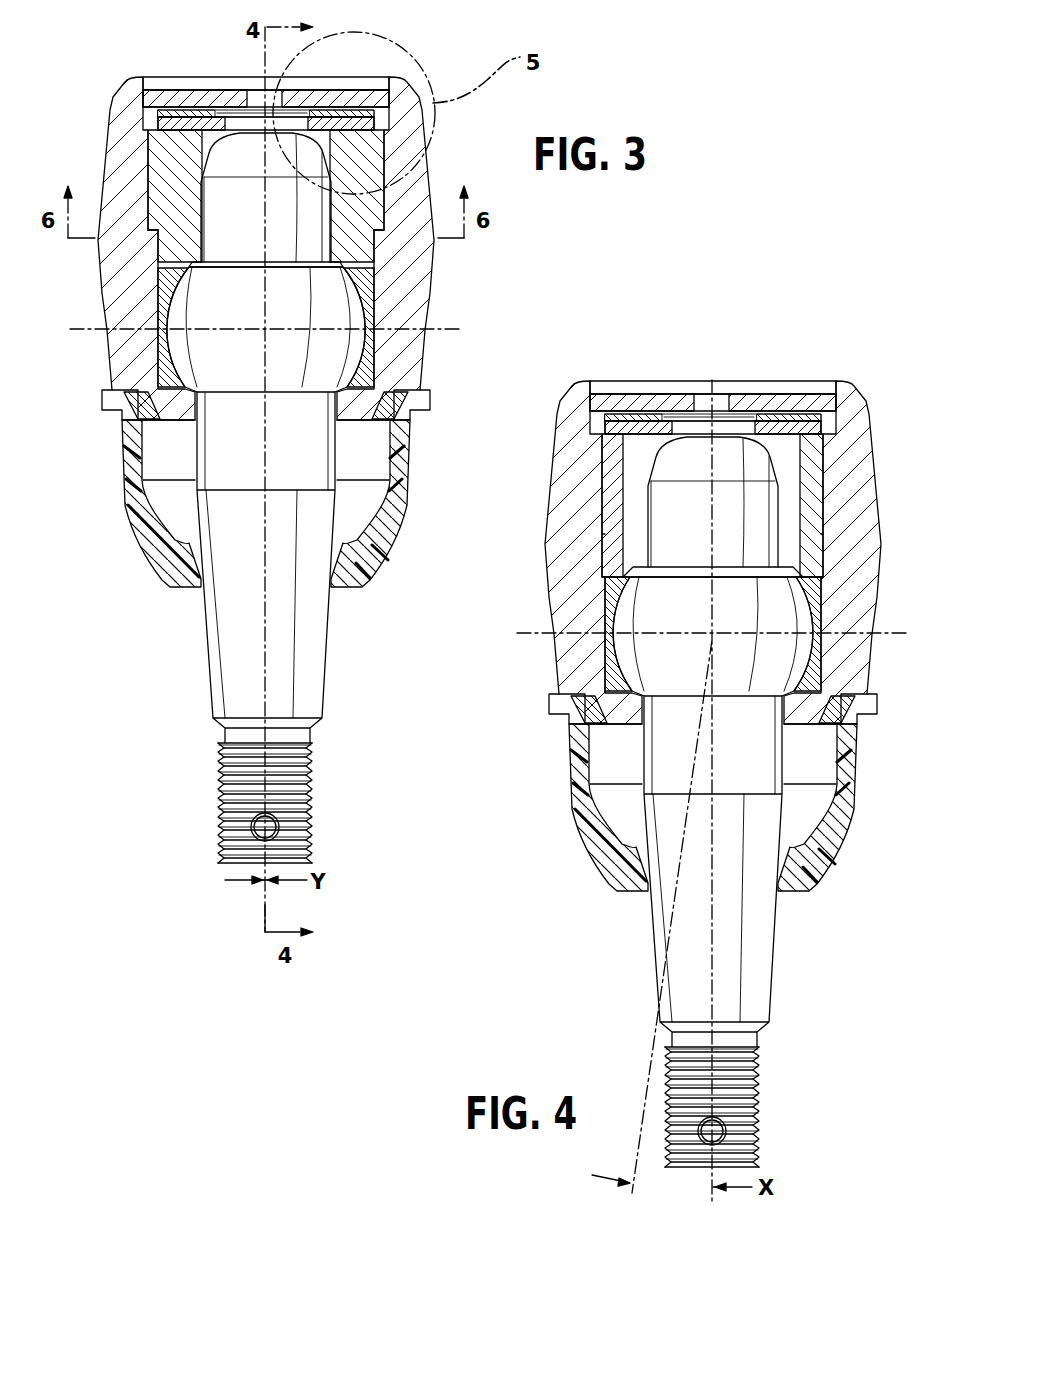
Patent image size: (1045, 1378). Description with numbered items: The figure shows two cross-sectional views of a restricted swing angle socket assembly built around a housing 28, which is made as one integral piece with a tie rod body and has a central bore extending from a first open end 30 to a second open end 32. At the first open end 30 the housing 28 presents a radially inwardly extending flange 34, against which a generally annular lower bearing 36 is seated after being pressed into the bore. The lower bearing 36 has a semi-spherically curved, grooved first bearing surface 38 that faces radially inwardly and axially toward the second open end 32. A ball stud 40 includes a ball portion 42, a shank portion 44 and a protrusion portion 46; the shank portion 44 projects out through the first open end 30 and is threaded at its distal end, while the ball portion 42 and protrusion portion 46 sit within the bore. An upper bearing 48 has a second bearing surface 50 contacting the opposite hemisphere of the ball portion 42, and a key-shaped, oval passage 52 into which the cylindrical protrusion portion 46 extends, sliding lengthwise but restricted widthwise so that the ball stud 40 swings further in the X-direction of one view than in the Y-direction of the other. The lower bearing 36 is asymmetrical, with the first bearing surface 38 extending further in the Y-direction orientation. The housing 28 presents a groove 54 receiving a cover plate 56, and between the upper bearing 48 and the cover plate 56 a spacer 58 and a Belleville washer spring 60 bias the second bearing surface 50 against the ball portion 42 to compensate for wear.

In FIG. 3, the housing 28 is at (96, 268).
In FIG. 4, the housing 28 is at (542, 576).
In FIG. 3, the first open end 30 is at (378, 408).
In FIG. 4, the first open end 30 is at (825, 712).
In FIG. 3, the second open end 32 is at (386, 92).
In FIG. 4, the second open end 32 is at (833, 396).
In FIG. 3, the flange 34 is at (170, 392).
In FIG. 4, the flange 34 is at (600, 708).
In FIG. 3, the lower bearing 36 is at (377, 360).
In FIG. 4, the lower bearing 36 is at (822, 663).
In FIG. 3, the first bearing surface 38 is at (183, 367).
In FIG. 4, the first bearing surface 38 is at (632, 672).
In FIG. 3, the ball stud 40 is at (330, 653).
In FIG. 4, the ball stud 40 is at (777, 975).
In FIG. 3, the ball portion 42 is at (352, 307).
In FIG. 4, the ball portion 42 is at (790, 612).
In FIG. 3, the shank portion 44 is at (310, 583).
In FIG. 4, the shank portion 44 is at (757, 887).
In FIG. 3, the protrusion portion 46 is at (213, 207).
In FIG. 4, the protrusion portion 46 is at (662, 513).
In FIG. 3, the upper bearing 48 is at (173, 247).
In FIG. 4, the upper bearing 48 is at (617, 552).
In FIG. 3, the second bearing surface 50 is at (167, 328).
In FIG. 4, the second bearing surface 50 is at (612, 634).
In FIG. 3, the passage 52 is at (183, 210).
In FIG. 4, the passage 52 is at (617, 500).
In FIG. 3, the groove 54 is at (155, 98).
In FIG. 4, the groove 54 is at (602, 401).
In FIG. 3, the cover plate 56 is at (357, 78).
In FIG. 4, the cover plate 56 is at (804, 382).
In FIG. 3, the spacer 58 is at (362, 133).
In FIG. 4, the spacer 58 is at (790, 440).
In FIG. 3, the spring 60 is at (368, 116).
In FIG. 4, the spring 60 is at (823, 420).